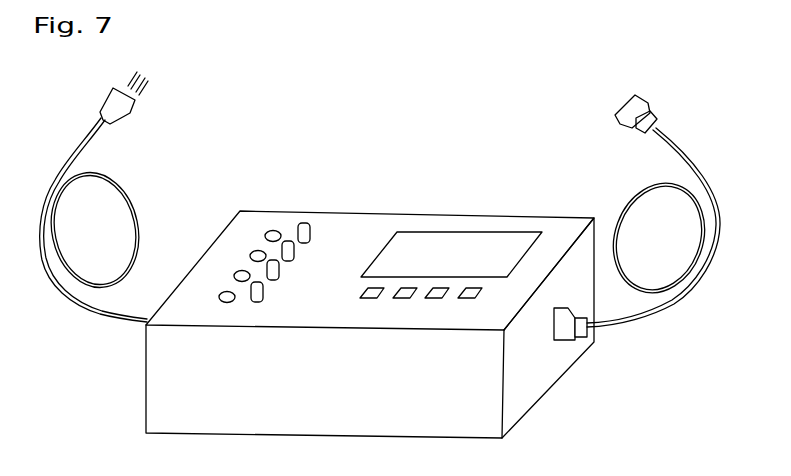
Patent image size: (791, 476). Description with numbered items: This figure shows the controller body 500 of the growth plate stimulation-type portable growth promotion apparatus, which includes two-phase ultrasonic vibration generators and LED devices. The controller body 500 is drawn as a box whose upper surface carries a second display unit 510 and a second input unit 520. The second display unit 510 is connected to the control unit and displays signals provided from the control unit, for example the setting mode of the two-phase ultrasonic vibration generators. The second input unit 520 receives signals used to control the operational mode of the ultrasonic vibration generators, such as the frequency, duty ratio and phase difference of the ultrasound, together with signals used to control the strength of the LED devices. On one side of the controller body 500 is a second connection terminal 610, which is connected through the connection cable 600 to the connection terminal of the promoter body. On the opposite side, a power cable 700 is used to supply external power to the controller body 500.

The controller body 500 is at (390, 213).
The second display unit 510 is at (466, 240).
The second input unit 520 is at (294, 213).
The connection cable 600 is at (670, 157).
The second connection terminal 610 is at (569, 350).
The power cable 700 is at (123, 197).